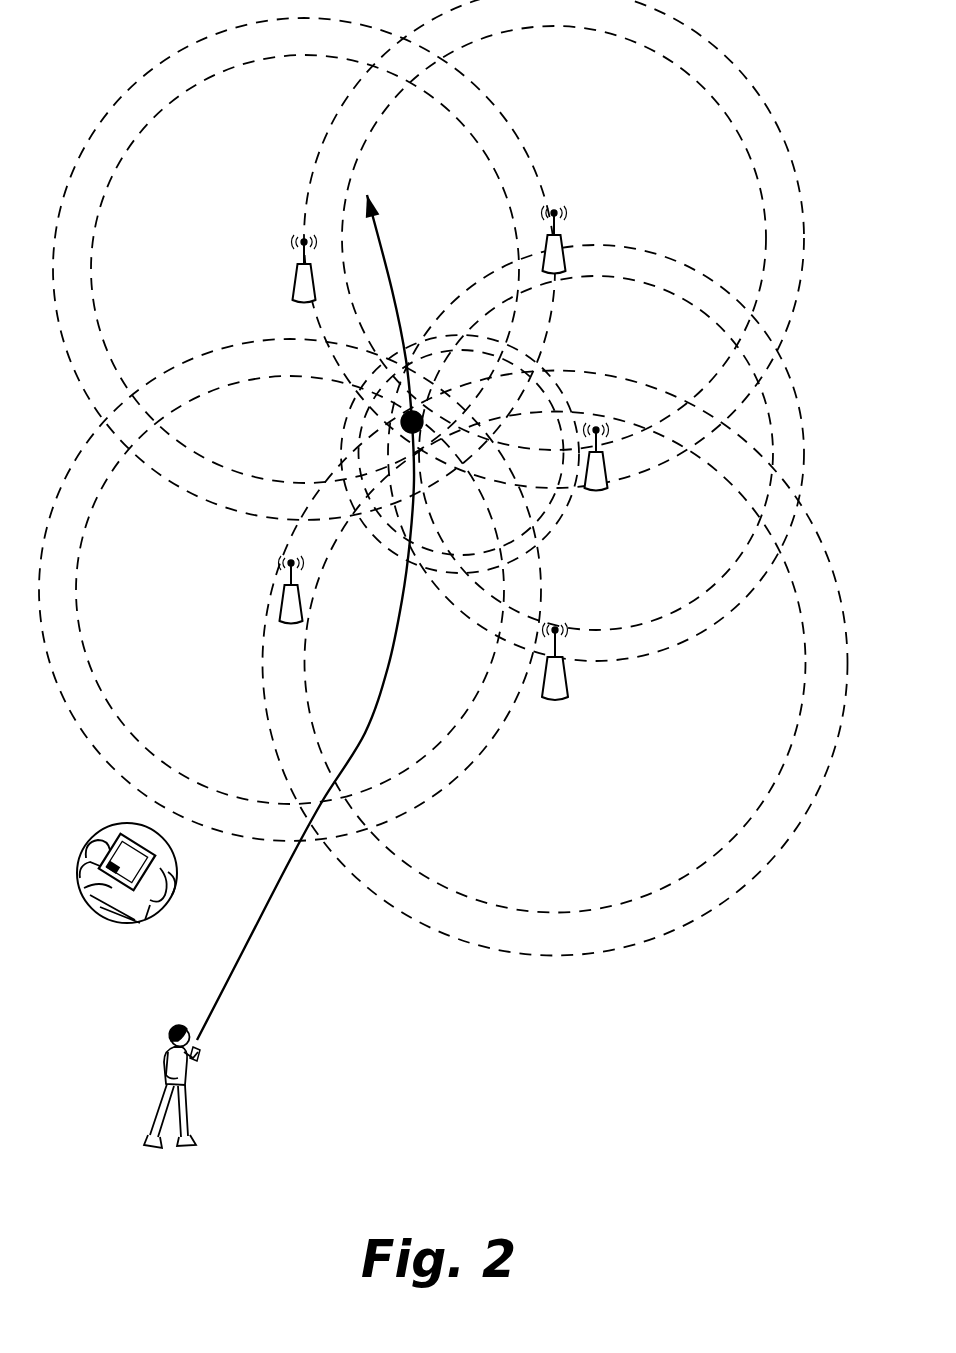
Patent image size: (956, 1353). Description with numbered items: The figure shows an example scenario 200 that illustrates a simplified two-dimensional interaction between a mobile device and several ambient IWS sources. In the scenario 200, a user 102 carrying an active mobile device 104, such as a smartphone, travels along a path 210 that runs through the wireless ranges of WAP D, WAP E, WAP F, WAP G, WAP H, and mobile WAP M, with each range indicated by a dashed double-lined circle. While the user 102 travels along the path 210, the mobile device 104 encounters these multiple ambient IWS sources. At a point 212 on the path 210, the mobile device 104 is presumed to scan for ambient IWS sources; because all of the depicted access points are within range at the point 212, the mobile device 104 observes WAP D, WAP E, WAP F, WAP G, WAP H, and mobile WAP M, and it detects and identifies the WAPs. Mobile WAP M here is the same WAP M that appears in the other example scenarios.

The user 102 is at (172, 1095).
The mobile device 104 is at (193, 1035).
The scenario 200 is at (690, 1078).
The path 210 is at (243, 947).
The point 212 is at (400, 416).